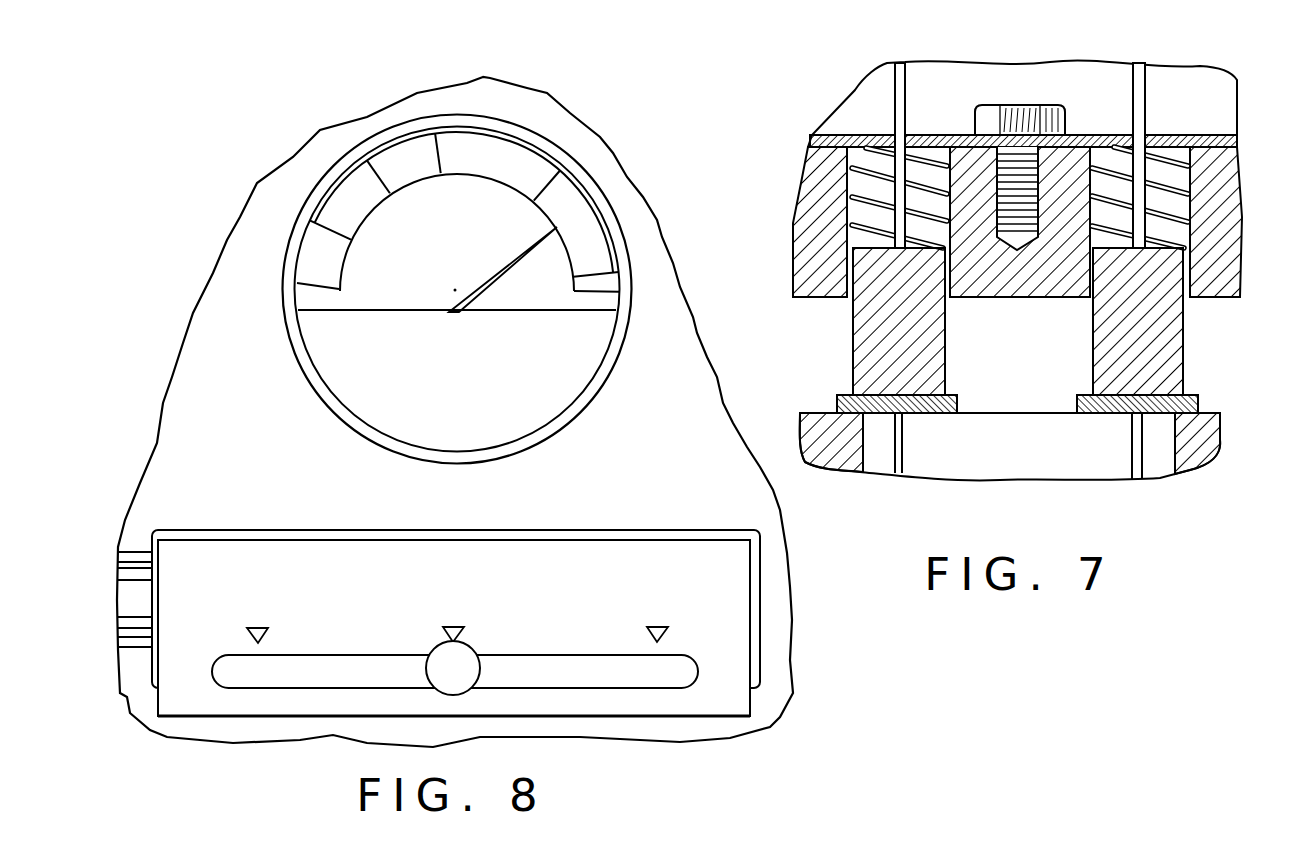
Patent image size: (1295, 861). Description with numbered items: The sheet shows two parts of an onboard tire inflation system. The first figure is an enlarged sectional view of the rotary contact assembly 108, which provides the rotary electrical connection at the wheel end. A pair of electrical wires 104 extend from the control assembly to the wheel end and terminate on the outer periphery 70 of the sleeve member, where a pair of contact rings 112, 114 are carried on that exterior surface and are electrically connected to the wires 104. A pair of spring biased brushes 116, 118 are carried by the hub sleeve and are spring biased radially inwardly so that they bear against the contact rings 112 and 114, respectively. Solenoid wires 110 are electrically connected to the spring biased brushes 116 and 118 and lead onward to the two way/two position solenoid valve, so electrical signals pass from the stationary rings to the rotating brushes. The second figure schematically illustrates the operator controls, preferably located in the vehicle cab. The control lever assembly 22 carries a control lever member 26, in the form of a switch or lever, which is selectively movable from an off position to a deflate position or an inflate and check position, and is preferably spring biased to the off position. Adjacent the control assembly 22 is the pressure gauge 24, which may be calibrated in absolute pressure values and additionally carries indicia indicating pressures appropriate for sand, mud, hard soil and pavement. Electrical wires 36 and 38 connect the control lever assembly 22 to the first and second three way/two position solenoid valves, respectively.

In FIG. 8, the control lever assembly 22 is at (607, 523).
In FIG. 8, the pressure gauge 24 is at (308, 180).
In FIG. 8, the control lever member 26 is at (436, 652).
In FIG. 8, the electrical wire 36 is at (140, 552).
In FIG. 8, the electrical wire 38 is at (127, 697).
In FIG. 7, the outer periphery of sleeve member 70 is at (813, 413).
In FIG. 7, the electrical wires 104 is at (903, 440).
In FIG. 7, the rotary contact assembly 108 is at (792, 148).
In FIG. 7, the solenoid wires 110 is at (906, 88).
In FIG. 7, the contact ring 112 is at (958, 403).
In FIG. 7, the contact ring 114 is at (1078, 402).
In FIG. 7, the spring biased brush 116 is at (1165, 331).
In FIG. 7, the spring biased brush 118 is at (873, 321).